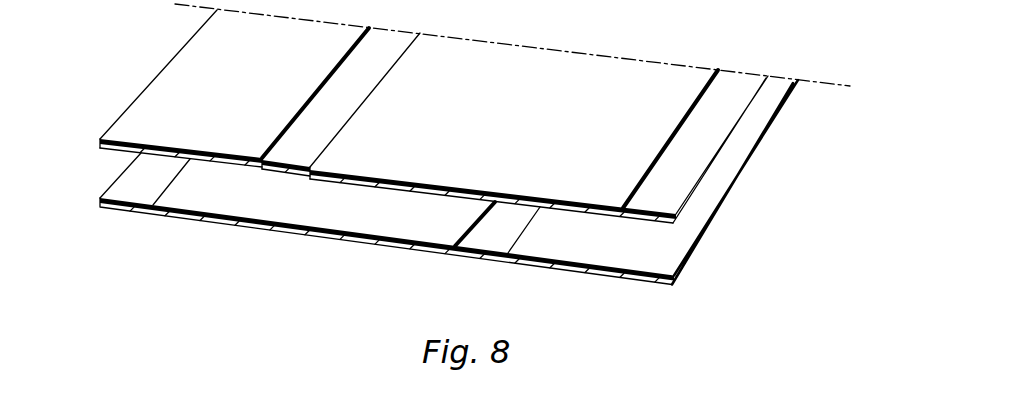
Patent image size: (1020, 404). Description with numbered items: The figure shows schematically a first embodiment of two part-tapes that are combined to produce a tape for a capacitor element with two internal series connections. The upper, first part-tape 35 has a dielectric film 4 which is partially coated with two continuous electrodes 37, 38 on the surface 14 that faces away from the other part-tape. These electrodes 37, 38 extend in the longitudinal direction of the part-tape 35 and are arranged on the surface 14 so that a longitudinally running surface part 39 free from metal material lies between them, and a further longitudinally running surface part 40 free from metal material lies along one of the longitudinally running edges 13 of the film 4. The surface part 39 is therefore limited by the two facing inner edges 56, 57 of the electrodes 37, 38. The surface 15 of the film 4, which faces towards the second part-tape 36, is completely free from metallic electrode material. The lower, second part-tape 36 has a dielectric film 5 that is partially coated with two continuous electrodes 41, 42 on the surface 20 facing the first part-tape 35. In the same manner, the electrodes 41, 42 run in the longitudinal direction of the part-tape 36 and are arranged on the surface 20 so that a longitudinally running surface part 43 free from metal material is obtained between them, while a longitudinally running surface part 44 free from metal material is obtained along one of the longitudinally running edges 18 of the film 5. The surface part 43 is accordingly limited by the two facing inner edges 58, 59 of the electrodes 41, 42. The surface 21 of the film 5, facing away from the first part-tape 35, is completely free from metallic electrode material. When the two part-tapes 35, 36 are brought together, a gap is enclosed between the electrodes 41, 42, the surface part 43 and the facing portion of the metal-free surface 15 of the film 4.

The first part-tape 35 is at (142, 65).
The second part-tape 36 is at (651, 303).
The electrode 37 is at (249, 85).
The electrode 38 is at (548, 122).
The surface part free from metal material 39 is at (334, 130).
The surface part free from metal material 40 is at (704, 160).
The electrode 41 is at (331, 213).
The electrode 42 is at (654, 261).
The surface part free from metal material 43 is at (503, 247).
The surface part free from metal material 44 is at (161, 187).
The surface 14 is at (394, 54).
The longitudinally running edge 13 is at (723, 153).
The surface 15 is at (395, 182).
The surface 20 is at (524, 222).
The surface 21 is at (346, 242).
The dielectric film 4 is at (101, 146).
The dielectric film 5 is at (100, 203).
The longitudinally running edge 18 is at (122, 176).
The inner edge 56 is at (338, 68).
The inner edge 57 is at (376, 88).
The inner edge 58 is at (478, 220).
The inner edge 59 is at (521, 229).